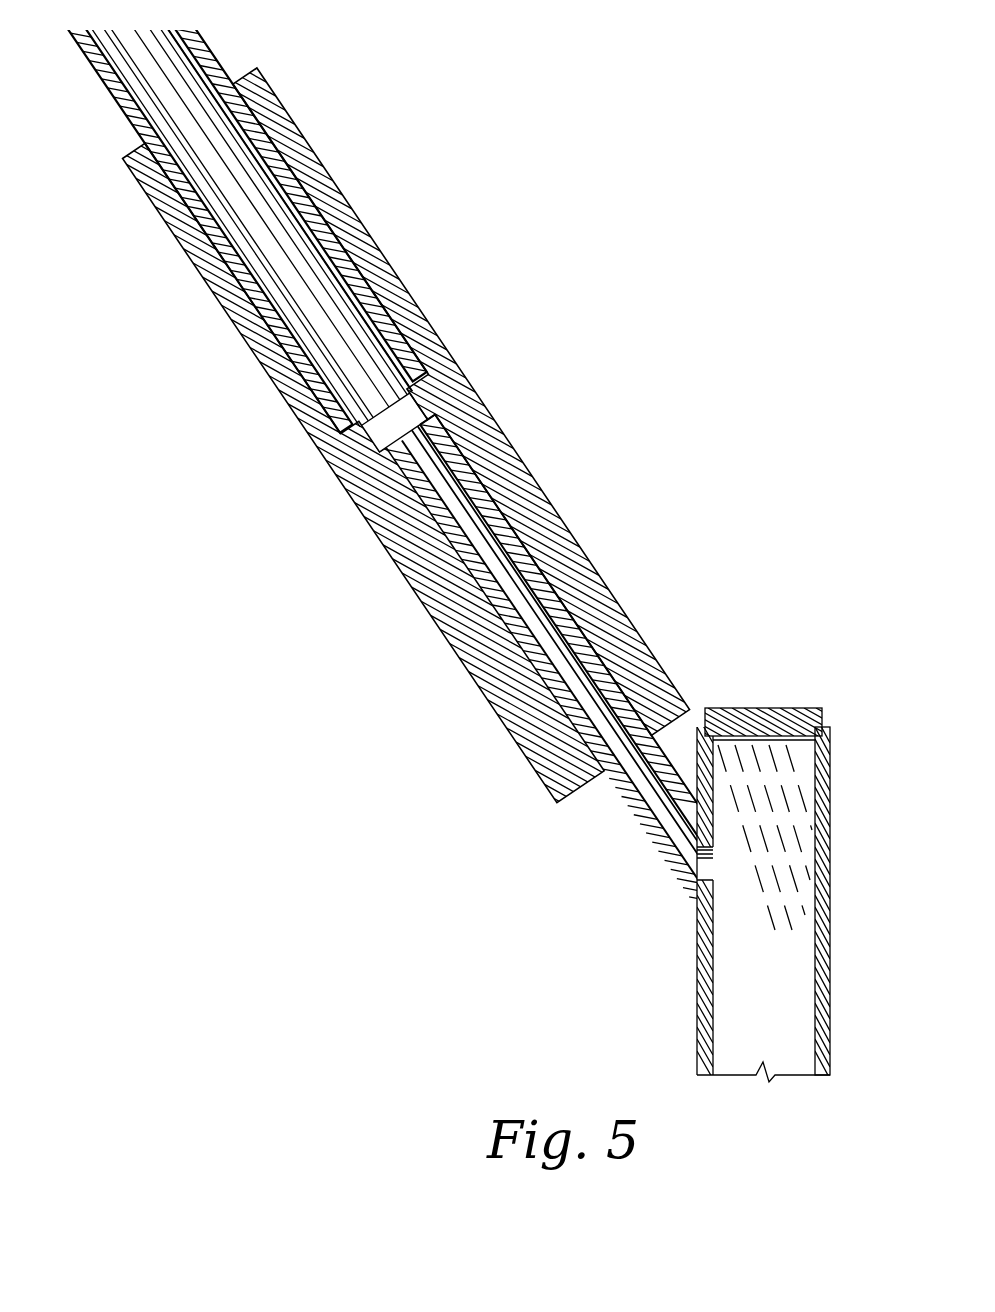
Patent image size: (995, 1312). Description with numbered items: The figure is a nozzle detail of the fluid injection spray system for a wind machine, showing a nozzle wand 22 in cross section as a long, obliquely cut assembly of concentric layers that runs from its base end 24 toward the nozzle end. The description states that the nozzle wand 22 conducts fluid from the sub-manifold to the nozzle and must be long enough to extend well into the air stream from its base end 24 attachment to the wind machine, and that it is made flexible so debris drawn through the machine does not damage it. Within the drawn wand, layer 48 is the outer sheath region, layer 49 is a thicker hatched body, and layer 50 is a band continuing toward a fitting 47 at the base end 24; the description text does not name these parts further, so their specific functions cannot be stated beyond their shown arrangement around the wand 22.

The nozzle wand 22 is at (392, 136).
The base end 24 is at (548, 766).
The connector body 47 is at (832, 800).
The braided shield 48 is at (112, 82).
The jacket layer 49 is at (510, 480).
The strength member band 50 is at (634, 808).